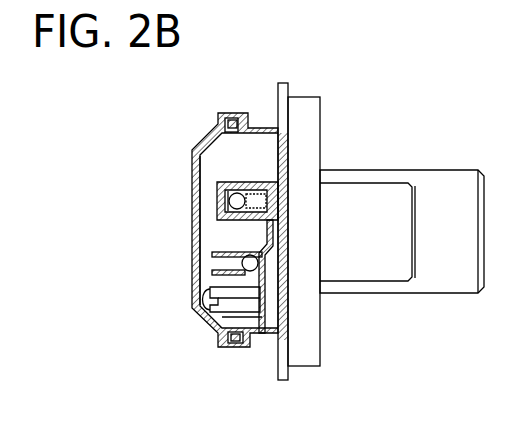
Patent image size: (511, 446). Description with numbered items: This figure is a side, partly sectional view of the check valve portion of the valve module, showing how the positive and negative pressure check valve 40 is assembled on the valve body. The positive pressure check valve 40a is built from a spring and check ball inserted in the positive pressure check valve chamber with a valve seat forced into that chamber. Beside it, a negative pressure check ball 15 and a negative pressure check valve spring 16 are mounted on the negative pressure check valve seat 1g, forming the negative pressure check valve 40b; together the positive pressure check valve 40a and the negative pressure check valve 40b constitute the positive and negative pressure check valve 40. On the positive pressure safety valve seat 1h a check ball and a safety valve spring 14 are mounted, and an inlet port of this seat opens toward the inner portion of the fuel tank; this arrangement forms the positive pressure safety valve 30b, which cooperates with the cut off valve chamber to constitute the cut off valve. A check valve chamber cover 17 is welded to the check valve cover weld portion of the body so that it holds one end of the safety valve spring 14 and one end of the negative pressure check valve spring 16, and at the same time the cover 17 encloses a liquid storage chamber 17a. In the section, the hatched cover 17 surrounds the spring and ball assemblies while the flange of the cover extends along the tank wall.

The check valve chamber cover 17 is at (203, 136).
The liquid storage chamber 17a is at (260, 138).
The positive and negative pressure check valve 40 is at (333, 125).
The positive pressure check valve 40a is at (226, 177).
The negative pressure check valve 40b is at (252, 235).
The negative pressure check ball 15 is at (256, 263).
The negative pressure check valve seat 1g is at (228, 263).
The negative pressure check valve spring 16 is at (195, 287).
The safety valve spring 14 is at (215, 312).
The positive pressure safety valve seat 1h is at (233, 299).
The positive pressure safety valve 30b is at (253, 322).